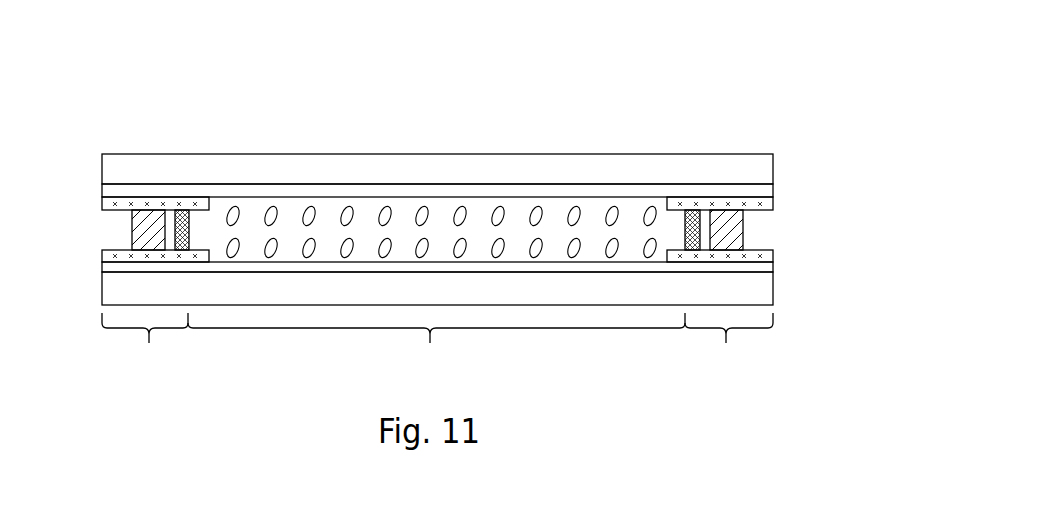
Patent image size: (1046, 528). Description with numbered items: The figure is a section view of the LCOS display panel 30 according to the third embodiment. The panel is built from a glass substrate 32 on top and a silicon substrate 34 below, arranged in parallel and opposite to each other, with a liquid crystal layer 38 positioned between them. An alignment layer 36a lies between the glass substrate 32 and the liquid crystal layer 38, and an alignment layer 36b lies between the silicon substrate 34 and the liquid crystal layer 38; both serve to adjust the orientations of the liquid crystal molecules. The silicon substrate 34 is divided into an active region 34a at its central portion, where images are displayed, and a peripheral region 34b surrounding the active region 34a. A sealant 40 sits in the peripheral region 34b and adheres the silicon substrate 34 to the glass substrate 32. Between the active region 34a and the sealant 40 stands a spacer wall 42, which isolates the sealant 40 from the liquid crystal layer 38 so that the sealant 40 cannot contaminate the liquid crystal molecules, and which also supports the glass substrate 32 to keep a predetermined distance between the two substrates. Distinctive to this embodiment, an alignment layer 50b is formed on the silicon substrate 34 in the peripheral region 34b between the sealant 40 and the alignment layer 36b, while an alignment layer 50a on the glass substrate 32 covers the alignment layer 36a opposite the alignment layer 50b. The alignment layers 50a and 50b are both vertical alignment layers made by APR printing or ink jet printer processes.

The LCOS display panel 30 is at (780, 76).
The glass substrate 32 is at (737, 165).
The silicon substrate 34 is at (108, 295).
The active region 34a is at (436, 350).
The peripheral region 34b is at (437, 345).
The alignment layer 36a is at (768, 193).
The alignment layer 36b is at (768, 278).
The liquid crystal layer 38 is at (405, 219).
The sealant 40 is at (140, 230).
The spacer wall 42 is at (182, 220).
The alignment layer 50a is at (105, 203).
The alignment layer 50b is at (105, 256).